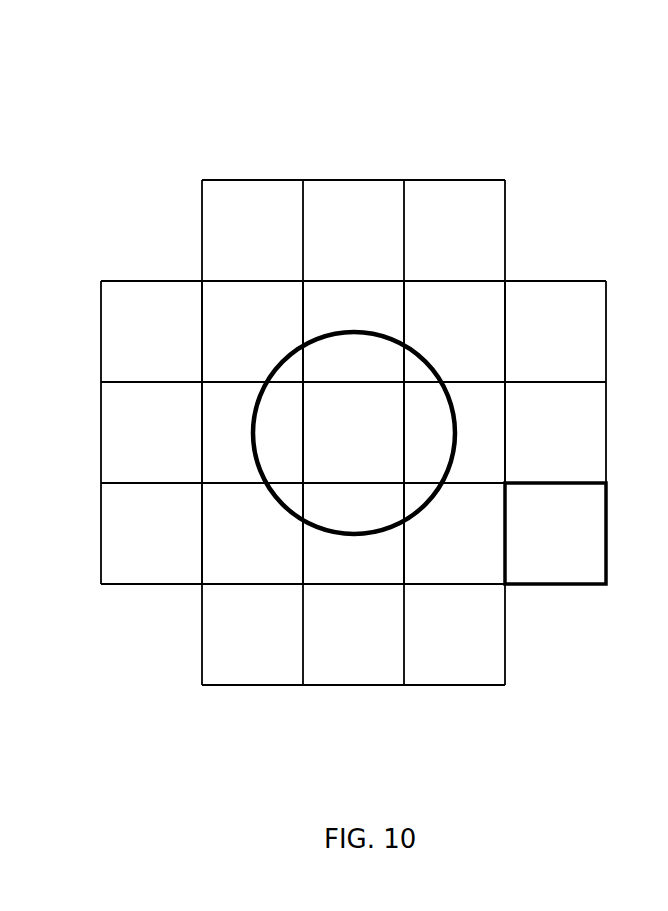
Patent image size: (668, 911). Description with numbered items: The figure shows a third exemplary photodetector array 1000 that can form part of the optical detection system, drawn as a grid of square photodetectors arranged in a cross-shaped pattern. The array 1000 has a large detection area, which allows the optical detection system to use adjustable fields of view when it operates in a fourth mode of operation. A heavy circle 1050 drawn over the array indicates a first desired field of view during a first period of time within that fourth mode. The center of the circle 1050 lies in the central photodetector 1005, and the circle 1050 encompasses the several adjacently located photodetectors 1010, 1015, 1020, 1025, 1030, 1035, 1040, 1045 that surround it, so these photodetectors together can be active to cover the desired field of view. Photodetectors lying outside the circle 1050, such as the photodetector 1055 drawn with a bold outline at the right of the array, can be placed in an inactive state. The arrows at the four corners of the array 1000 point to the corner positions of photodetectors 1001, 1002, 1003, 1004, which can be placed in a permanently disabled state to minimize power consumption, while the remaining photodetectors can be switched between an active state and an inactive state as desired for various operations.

The third exemplary photodetector array 1000 is at (505, 90).
The corner photodetector 1001 is at (145, 225).
The corner photodetector 1002 is at (563, 225).
The corner photodetector 1003 is at (145, 652).
The corner photodetector 1004 is at (555, 652).
The photodetector 1005 is at (353, 432).
The photodetector 1010 is at (454, 432).
The photodetector 1015 is at (454, 533).
The photodetector 1020 is at (353, 533).
The photodetector 1025 is at (252, 533).
The photodetector 1030 is at (252, 432).
The photodetector 1035 is at (252, 331).
The photodetector 1040 is at (353, 331).
The photodetector 1045 is at (454, 331).
The circle 1050 is at (347, 330).
The photodetector 1055 is at (555, 533).